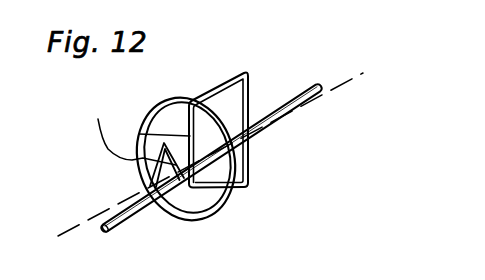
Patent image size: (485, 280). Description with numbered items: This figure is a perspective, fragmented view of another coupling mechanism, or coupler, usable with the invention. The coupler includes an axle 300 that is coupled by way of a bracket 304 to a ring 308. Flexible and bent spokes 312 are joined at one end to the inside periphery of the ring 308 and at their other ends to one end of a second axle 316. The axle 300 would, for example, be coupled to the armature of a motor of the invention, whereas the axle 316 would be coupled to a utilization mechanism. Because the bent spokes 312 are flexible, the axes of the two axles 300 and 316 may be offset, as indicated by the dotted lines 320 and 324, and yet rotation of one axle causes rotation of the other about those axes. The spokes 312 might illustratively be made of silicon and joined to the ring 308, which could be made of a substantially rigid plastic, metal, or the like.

The axle 300 is at (299, 105).
The bracket 304 is at (225, 86).
The ring 308 is at (226, 220).
The flexible and bent spokes 312 is at (139, 134).
The axle 316 is at (114, 234).
The dotted line 320 is at (58, 236).
The dotted line 324 is at (350, 77).